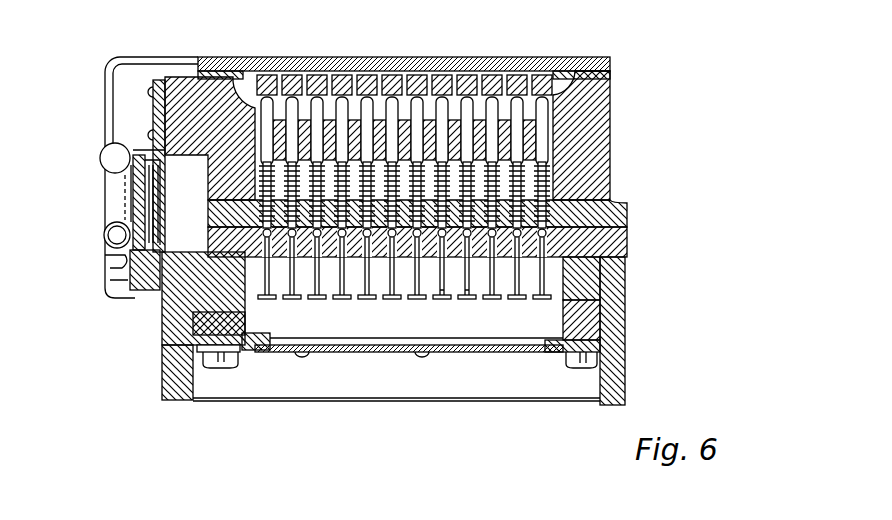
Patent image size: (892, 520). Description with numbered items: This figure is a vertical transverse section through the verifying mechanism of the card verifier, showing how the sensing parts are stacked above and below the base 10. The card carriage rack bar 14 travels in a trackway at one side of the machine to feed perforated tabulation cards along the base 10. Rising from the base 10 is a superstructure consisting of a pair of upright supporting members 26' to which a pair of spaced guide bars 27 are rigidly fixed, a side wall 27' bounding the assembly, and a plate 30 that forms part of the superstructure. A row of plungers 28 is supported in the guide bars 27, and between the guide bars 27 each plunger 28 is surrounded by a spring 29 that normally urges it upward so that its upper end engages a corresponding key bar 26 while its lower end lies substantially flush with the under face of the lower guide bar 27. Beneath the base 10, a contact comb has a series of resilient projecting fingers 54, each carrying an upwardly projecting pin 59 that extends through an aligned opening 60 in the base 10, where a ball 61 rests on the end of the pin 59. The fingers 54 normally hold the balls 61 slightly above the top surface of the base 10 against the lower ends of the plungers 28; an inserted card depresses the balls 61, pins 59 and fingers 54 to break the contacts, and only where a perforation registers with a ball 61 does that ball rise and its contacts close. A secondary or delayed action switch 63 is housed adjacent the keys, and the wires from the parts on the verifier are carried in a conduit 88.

The base 10 is at (620, 323).
The rack bar 14 is at (165, 232).
The key bar 26 is at (404, 58).
The upright supporting member 26' is at (406, 161).
The guide bar 27 is at (441, 211).
The side wall 27' is at (601, 135).
The plunger 28 is at (548, 120).
The spring 29 is at (547, 184).
The plate 30 is at (600, 61).
The projecting finger 54 is at (470, 288).
The pin 59 is at (412, 282).
The opening 60 is at (338, 262).
The ball 61 is at (546, 233).
The secondary or delayed action switch 63 is at (128, 107).
The conduit 88 is at (112, 148).